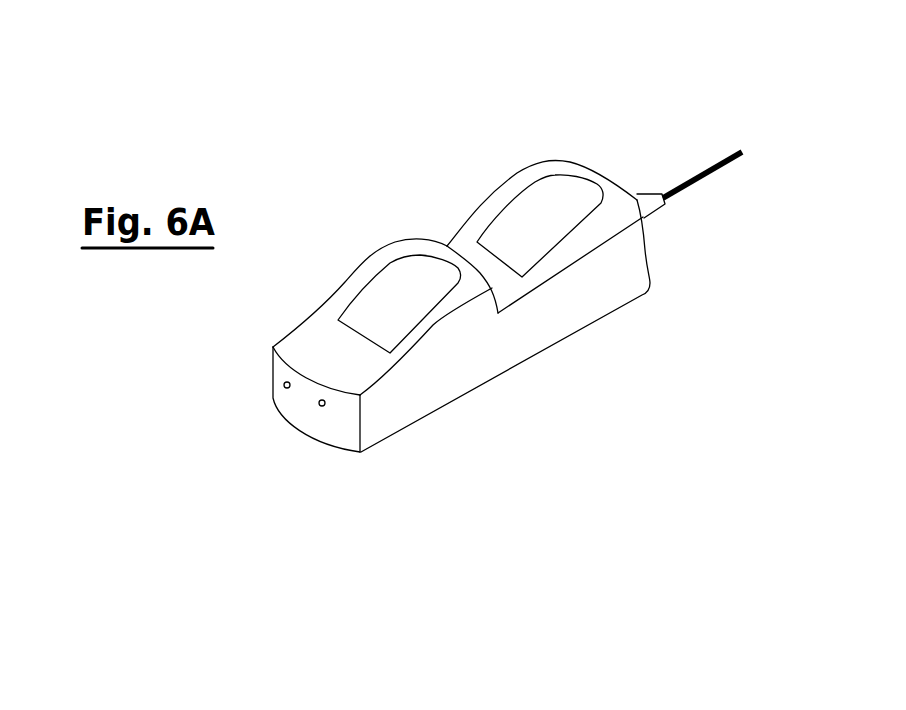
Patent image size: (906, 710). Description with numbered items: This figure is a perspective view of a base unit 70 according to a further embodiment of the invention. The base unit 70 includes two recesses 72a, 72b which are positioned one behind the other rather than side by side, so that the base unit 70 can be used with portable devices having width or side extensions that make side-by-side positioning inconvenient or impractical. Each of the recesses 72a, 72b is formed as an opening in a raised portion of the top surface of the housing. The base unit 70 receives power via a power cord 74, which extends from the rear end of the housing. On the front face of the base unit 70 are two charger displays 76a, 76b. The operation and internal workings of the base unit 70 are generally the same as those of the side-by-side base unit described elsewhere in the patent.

The base unit 70 is at (588, 300).
The recess 72a is at (407, 274).
The recess 72b is at (551, 185).
The power cord 74 is at (645, 192).
The charger display 76a is at (284, 388).
The charger display 76b is at (321, 406).